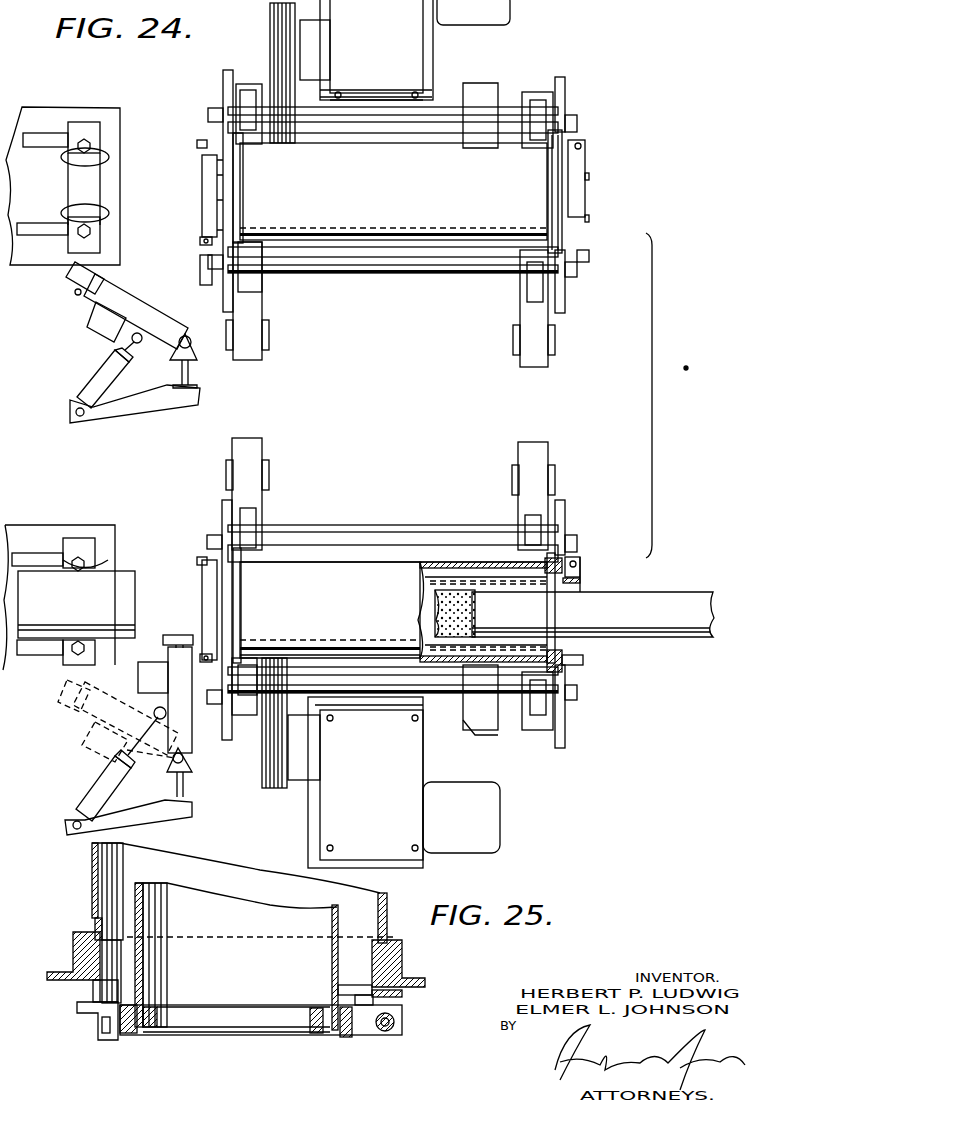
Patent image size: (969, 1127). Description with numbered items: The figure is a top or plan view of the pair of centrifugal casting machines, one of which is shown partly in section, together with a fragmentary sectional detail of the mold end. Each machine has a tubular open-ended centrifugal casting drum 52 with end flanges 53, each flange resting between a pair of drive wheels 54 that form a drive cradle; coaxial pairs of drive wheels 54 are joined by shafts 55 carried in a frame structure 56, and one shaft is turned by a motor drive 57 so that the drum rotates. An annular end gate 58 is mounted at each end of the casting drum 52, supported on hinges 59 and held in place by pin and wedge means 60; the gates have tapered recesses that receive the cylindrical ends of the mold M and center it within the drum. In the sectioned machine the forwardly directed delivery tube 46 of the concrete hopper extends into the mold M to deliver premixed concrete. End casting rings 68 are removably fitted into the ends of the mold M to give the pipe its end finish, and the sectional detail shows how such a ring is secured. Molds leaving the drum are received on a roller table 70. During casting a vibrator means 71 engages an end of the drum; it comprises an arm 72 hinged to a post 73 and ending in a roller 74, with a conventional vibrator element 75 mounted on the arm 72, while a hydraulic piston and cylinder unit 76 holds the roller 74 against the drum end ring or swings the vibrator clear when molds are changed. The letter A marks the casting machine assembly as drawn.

In FIG. 24, the delivery tube 46 is at (682, 602).
In FIG. 24, the centrifugal casting drum 52 is at (440, 562).
In FIG. 25, the centrifugal casting drum 52 is at (92, 886).
In FIG. 24, the end flanges 53 is at (237, 181).
In FIG. 25, the end flanges 53 is at (88, 955).
In FIG. 24, the drive wheels 54 is at (565, 93).
In FIG. 24, the shafts 55 is at (382, 112).
In FIG. 24, the frame structure 56 is at (262, 302).
In FIG. 24, the motor drive 57 is at (386, 434).
In FIG. 24, the annular end gate 58 is at (192, 187).
In FIG. 25, the annular end gate 58 is at (137, 1046).
In FIG. 24, the hinges 59 is at (203, 241).
In FIG. 25, the hinges 59 is at (385, 1031).
In FIG. 24, the pin and wedge means 60 is at (198, 144).
In FIG. 25, the pin and wedge means 60 is at (100, 1025).
In FIG. 25, the end casting rings 68 is at (160, 1025).
In FIG. 24, the table 70 is at (50, 107).
In FIG. 24, the vibrator means 71 is at (136, 274).
In FIG. 24, the arm 72 is at (140, 303).
In FIG. 24, the post 73 is at (190, 347).
In FIG. 24, the roller 74 is at (75, 293).
In FIG. 24, the vibrator element 75 is at (90, 330).
In FIG. 24, the hydraulic piston and cylinder unit 76 is at (108, 380).
In FIG. 24, the drum assembly A is at (440, 280).
In FIG. 24, the mold M is at (473, 512).
In FIG. 25, the mold M is at (330, 920).